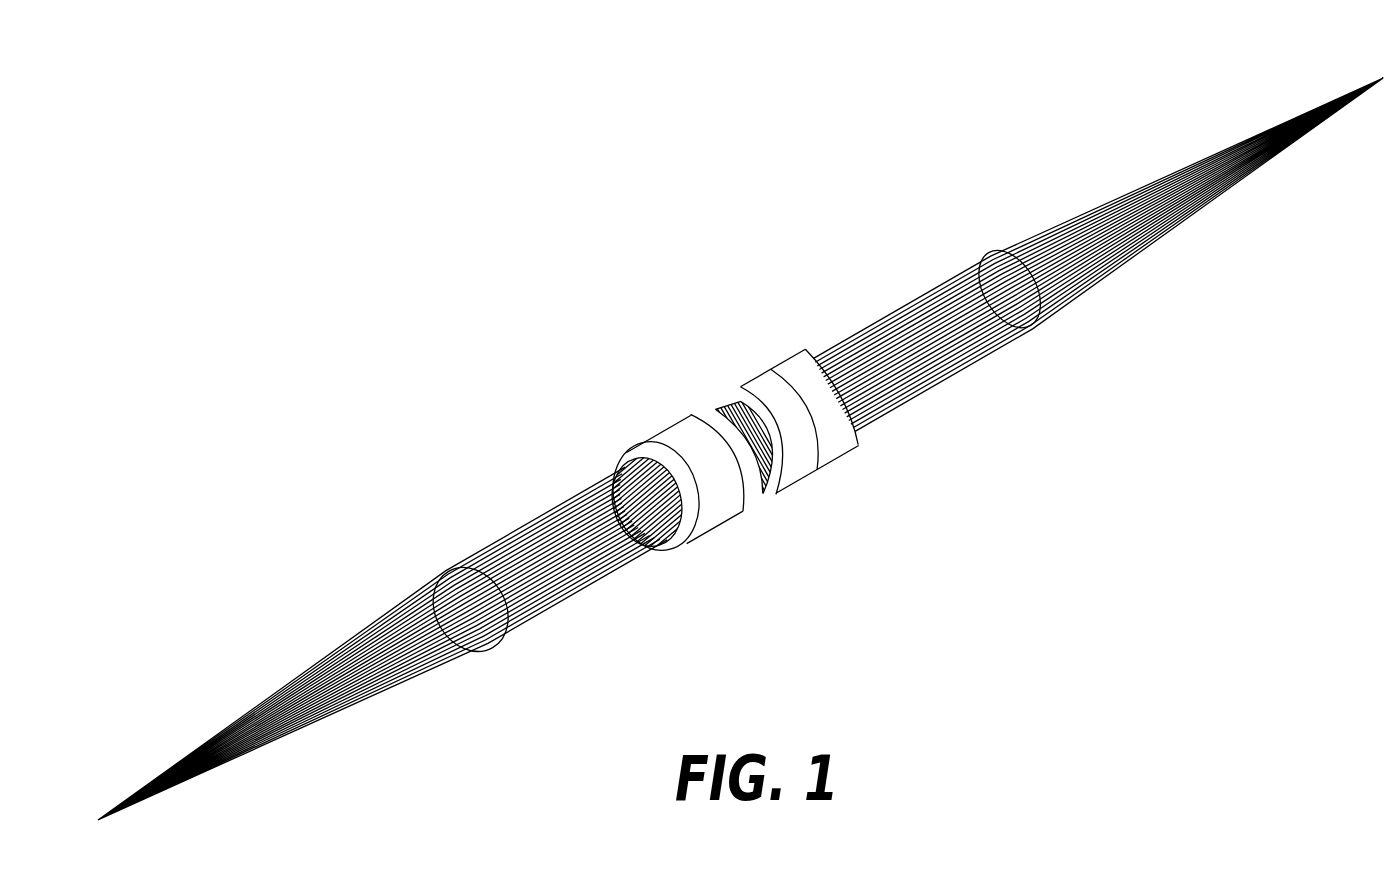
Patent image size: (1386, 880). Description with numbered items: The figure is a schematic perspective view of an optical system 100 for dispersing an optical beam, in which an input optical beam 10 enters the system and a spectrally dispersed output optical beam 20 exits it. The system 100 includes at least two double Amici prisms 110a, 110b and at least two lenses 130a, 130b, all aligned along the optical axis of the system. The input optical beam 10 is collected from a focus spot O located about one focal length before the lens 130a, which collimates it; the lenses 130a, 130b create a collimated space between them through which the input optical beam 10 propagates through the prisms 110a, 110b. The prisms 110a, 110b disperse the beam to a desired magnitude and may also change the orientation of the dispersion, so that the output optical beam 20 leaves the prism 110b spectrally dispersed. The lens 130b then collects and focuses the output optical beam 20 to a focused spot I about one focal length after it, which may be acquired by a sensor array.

The optical system 100 is at (488, 357).
The input optical beam 10 is at (352, 710).
The output optical beam 20 is at (1243, 183).
The double Amici prism 110a is at (673, 540).
The double Amici prism 110b is at (790, 460).
The lens 130a is at (510, 633).
The lens 130b is at (1070, 310).